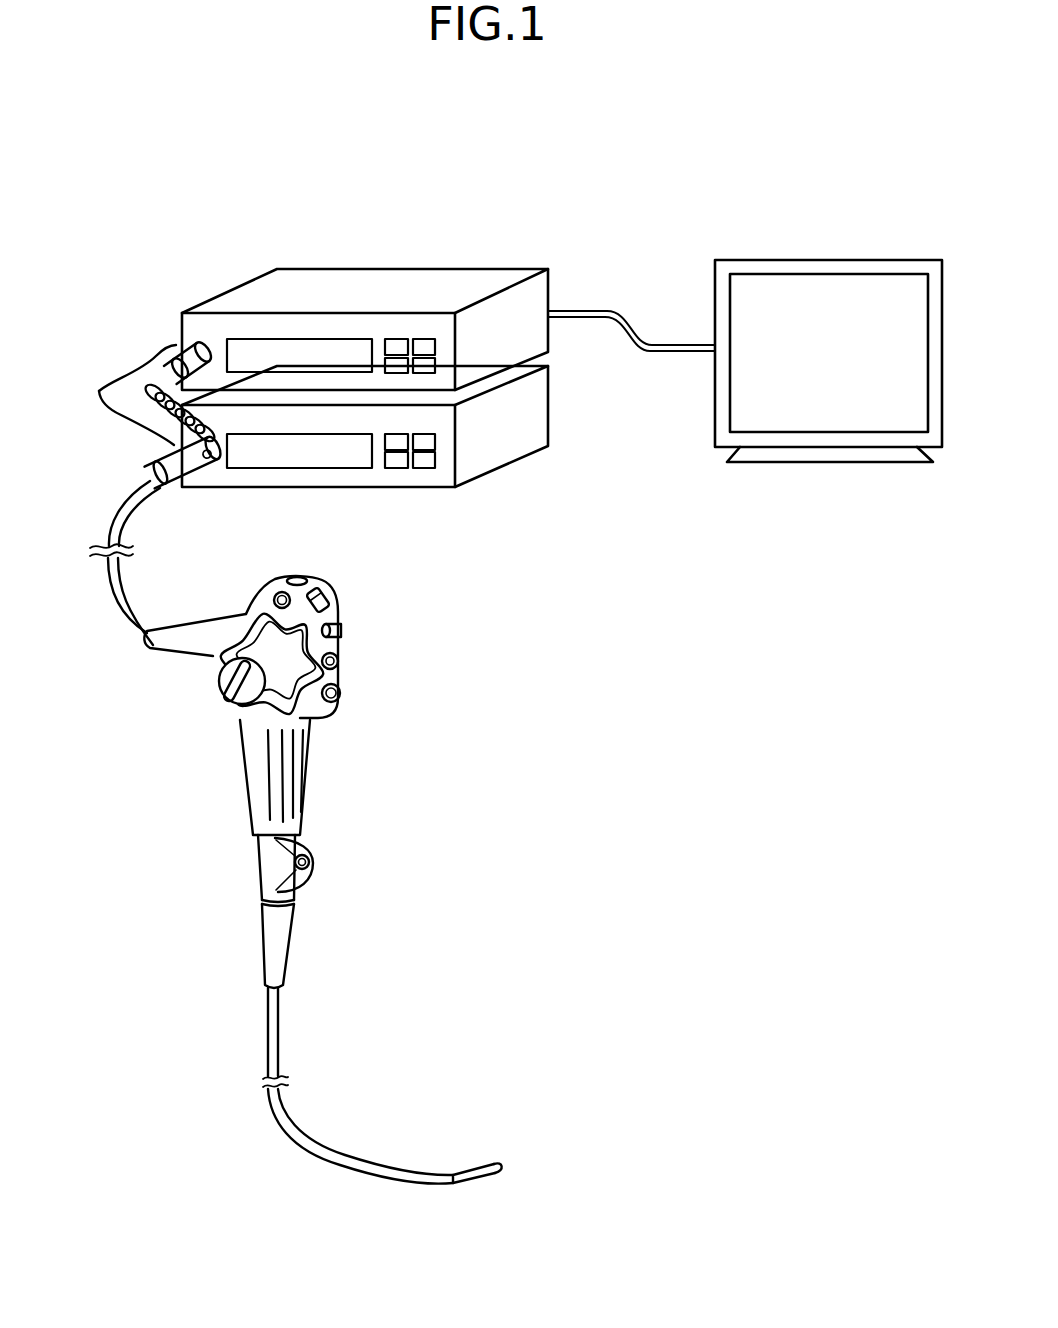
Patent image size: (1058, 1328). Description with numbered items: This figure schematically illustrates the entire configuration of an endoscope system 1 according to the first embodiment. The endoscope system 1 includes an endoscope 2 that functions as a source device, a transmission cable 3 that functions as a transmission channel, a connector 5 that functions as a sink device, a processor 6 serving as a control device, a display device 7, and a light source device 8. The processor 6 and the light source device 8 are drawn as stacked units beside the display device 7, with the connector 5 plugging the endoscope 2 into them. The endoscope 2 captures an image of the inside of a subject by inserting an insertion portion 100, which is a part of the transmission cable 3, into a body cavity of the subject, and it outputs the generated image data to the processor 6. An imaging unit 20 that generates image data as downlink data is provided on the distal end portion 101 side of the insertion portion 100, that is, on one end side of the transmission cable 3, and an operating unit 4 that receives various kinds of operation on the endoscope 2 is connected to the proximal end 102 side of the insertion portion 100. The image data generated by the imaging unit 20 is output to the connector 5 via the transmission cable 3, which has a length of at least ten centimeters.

The endoscope system 1 is at (871, 183).
The endoscope 2 is at (434, 722).
The transmission cable 3 is at (107, 583).
The insertion portion 100 is at (328, 1160).
The operating unit 4 is at (336, 674).
The connector 5 is at (99, 391).
The processor 6 is at (512, 277).
The display device 7 is at (831, 266).
The light source device 8 is at (540, 405).
The imaging unit 20 is at (497, 1178).
The distal end portion 101 is at (503, 1158).
The proximal end 102 is at (284, 996).